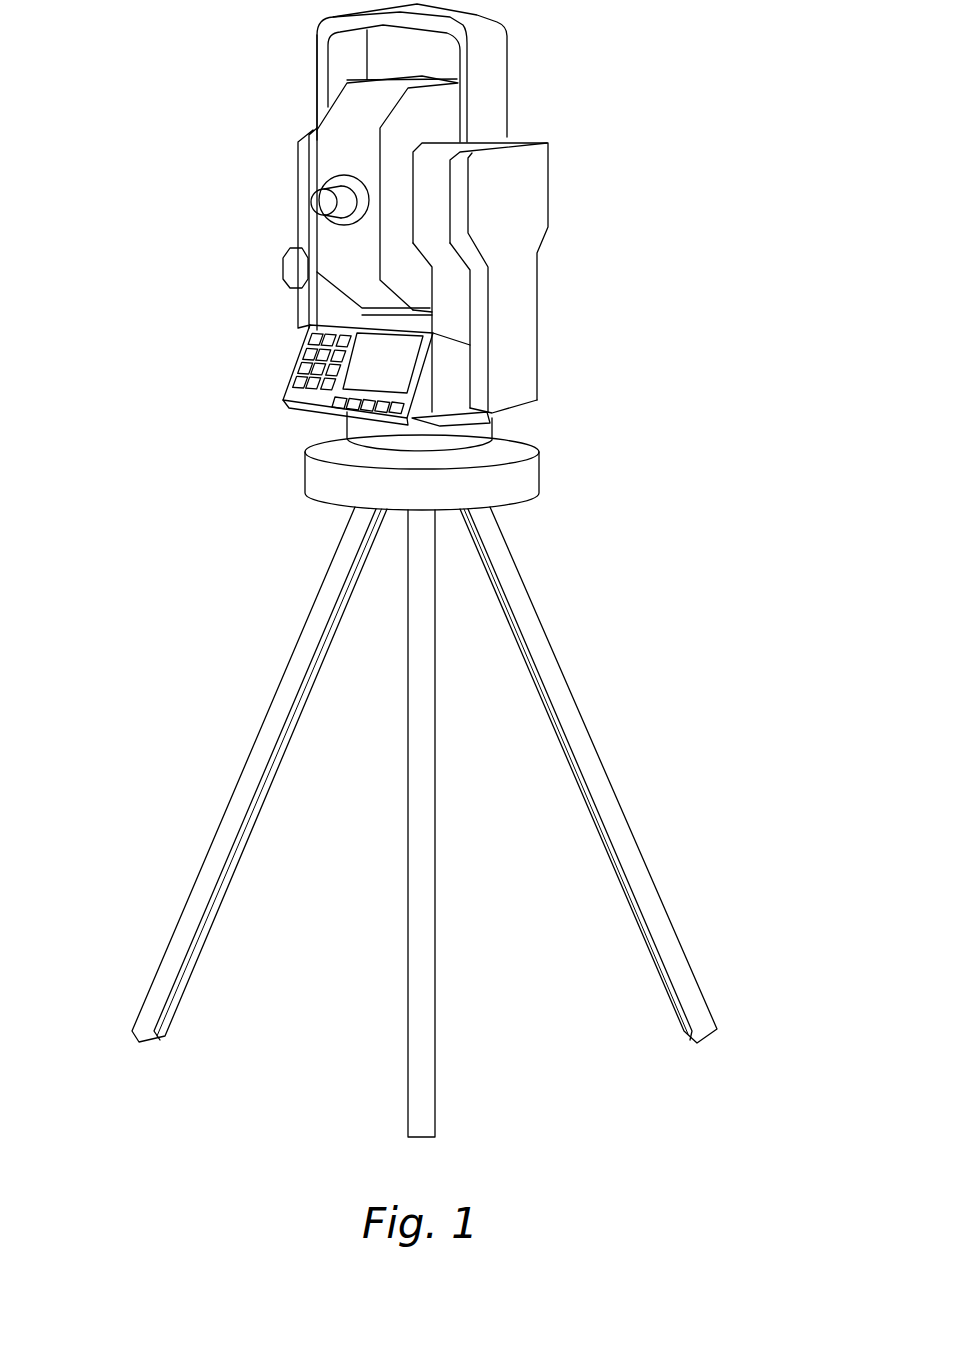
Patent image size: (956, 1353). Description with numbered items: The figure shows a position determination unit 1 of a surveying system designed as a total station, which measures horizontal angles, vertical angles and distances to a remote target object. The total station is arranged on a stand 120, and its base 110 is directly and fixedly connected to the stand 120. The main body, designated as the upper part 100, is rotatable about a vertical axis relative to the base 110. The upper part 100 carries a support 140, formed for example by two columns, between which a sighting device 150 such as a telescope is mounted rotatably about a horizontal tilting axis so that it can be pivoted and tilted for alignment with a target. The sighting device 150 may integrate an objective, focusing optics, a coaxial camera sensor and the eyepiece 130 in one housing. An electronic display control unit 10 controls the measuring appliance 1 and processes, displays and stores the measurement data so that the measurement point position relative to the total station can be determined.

The position determination unit 1 is at (578, 536).
The display control unit 10 is at (320, 400).
The upper part 100 is at (697, 3).
The base 110 is at (332, 488).
The stand 120 is at (276, 729).
The eyepiece 130 is at (322, 208).
The support 140 is at (520, 178).
The sighting device 150 is at (375, 97).